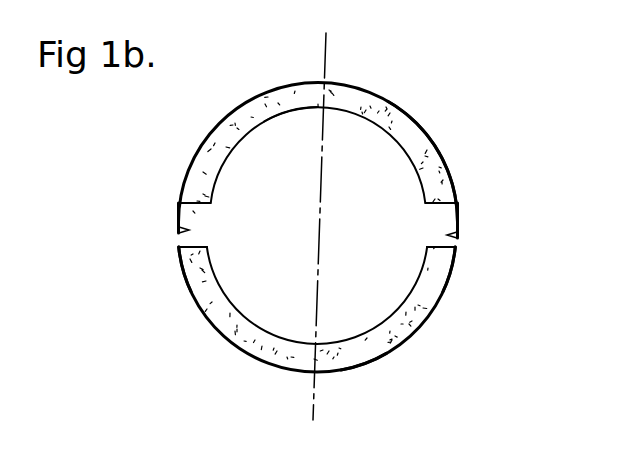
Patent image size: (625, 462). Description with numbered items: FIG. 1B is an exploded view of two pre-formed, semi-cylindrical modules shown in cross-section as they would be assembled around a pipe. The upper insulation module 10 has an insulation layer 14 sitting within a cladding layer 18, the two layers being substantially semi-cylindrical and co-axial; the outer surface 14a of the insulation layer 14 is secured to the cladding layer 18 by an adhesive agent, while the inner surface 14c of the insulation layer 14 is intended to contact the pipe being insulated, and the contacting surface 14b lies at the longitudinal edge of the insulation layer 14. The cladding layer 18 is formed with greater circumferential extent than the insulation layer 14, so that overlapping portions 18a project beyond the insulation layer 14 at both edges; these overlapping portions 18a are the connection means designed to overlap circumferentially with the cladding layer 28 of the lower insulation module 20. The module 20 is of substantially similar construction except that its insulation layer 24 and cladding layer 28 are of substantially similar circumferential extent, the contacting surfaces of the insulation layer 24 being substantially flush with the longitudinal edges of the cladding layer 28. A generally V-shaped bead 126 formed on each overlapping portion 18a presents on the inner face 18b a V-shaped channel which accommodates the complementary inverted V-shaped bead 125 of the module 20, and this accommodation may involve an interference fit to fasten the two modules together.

The insulation module 10 is at (418, 95).
The insulation layer 14 is at (195, 143).
The outer surface of the insulation layer 14a is at (432, 248).
The contacting surface of the insulation layer 14b is at (353, 246).
The inner surface of the insulation layer 14c is at (264, 126).
The cladding layer 18 is at (445, 152).
The overlapping portion 18a is at (177, 215).
The inner face of the overlapping portion 18b is at (173, 242).
The insulation module 20 is at (377, 363).
The insulation layer 24 is at (410, 338).
The cladding layer 28 is at (235, 350).
The inverted V shaped bead 125 is at (178, 282).
The longitudinally extending bead 126 is at (170, 229).